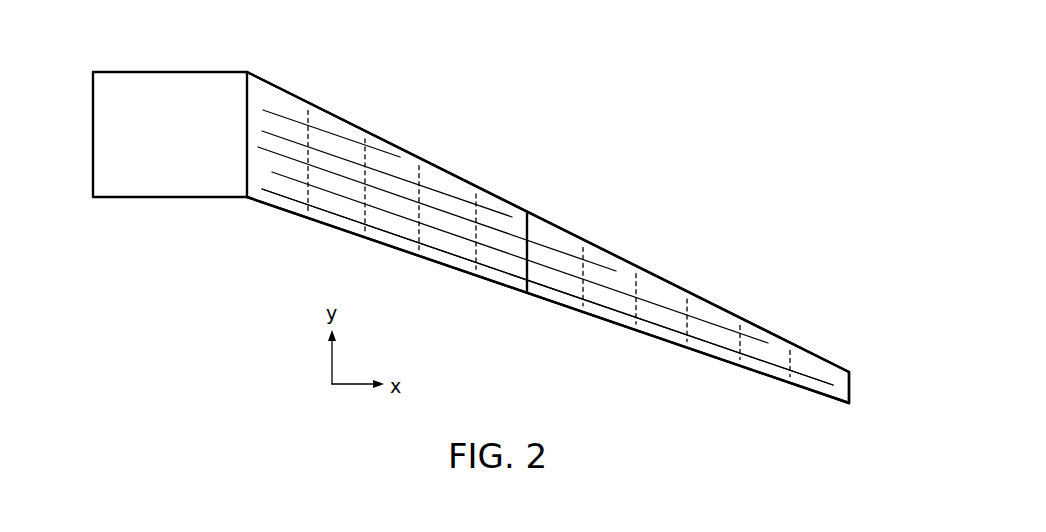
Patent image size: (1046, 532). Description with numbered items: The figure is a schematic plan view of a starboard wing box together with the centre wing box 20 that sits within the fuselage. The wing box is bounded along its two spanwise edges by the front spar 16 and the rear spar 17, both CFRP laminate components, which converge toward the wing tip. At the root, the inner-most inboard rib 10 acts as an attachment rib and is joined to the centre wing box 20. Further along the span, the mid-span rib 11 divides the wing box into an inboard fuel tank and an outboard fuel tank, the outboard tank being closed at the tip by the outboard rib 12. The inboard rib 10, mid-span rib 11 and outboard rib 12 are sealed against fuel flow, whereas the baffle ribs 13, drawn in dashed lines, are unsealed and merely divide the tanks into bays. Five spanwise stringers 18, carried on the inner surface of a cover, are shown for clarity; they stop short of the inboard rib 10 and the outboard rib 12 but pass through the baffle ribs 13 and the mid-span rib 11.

The inboard rib 10 is at (246, 158).
The mid-span rib 11 is at (532, 228).
The outboard rib 12 is at (849, 385).
The baffle ribs 13 is at (310, 138).
The front spar 16 is at (443, 171).
The rear spar 17 is at (450, 267).
The stringers 18 is at (547, 290).
The centre wing box 20 is at (180, 98).